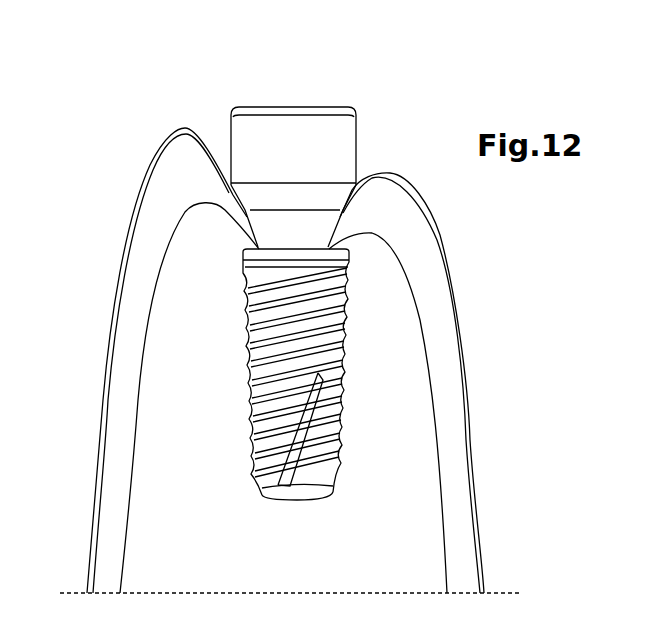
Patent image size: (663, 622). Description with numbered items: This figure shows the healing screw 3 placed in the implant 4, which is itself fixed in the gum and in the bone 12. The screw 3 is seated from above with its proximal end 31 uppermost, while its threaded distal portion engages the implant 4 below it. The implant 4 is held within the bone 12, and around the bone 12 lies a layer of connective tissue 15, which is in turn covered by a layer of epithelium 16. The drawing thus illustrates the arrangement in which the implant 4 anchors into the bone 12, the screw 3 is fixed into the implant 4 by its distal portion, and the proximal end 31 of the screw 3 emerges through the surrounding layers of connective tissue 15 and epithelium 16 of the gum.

The healing screw 3 is at (336, 140).
The proximal end 31 is at (300, 105).
The implant 4 is at (348, 363).
The bone 12 is at (417, 512).
The connective tissue 15 is at (437, 310).
The epithelium 16 is at (448, 252).